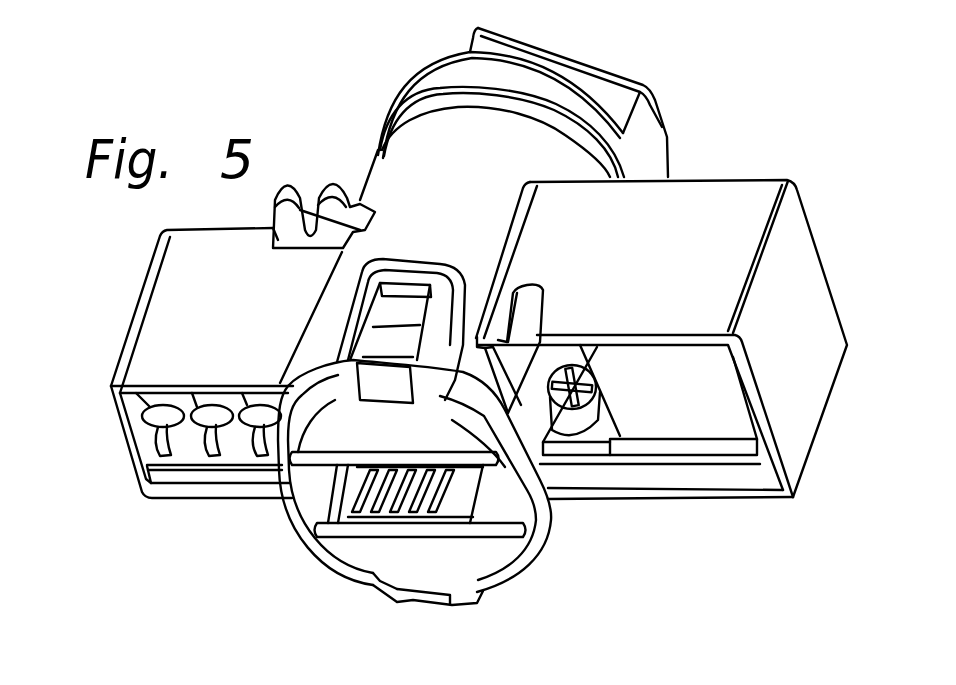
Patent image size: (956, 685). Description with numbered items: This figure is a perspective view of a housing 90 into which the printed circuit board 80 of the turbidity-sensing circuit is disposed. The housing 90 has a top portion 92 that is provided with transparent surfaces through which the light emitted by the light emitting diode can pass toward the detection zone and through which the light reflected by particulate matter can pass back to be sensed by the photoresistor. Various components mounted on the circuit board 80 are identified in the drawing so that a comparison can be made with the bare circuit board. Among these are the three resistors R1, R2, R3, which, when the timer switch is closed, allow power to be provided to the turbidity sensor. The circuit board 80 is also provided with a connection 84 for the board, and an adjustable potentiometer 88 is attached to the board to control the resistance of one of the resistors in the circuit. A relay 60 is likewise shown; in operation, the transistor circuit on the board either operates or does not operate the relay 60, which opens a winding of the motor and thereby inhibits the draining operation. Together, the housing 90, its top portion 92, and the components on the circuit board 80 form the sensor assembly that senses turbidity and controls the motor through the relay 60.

The relay 60 is at (707, 420).
The circuit board 80 is at (187, 455).
The connection 84 is at (380, 455).
The adjustable potentiometer 88 is at (570, 427).
The housing 90 is at (137, 338).
The top portion 92 is at (662, 137).
The resistor R1 is at (150, 412).
The resistor R2 is at (220, 427).
The resistor R3 is at (243, 413).